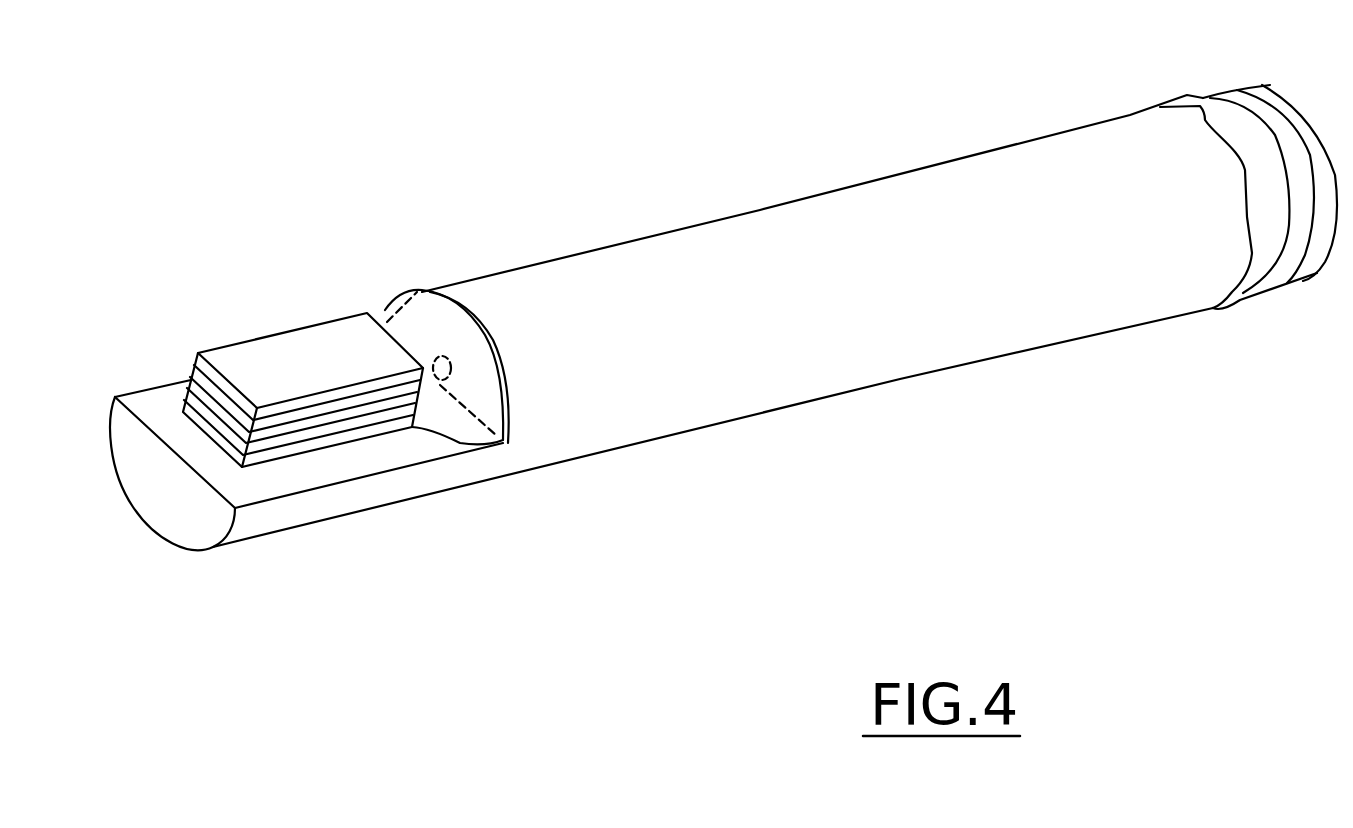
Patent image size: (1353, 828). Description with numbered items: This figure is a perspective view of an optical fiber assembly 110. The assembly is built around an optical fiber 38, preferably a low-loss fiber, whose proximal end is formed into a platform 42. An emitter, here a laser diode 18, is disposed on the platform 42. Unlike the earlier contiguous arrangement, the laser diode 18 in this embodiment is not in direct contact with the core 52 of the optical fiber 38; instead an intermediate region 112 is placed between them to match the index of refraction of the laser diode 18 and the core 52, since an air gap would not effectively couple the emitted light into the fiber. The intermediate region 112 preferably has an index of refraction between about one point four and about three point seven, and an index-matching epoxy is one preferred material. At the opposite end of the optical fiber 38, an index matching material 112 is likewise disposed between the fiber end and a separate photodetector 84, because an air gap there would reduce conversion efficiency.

The optical fiber assembly 110 is at (643, 162).
The optical fiber 38 is at (937, 340).
The platform 42 is at (153, 412).
The laser diode 18 is at (342, 333).
The intermediate region 112 is at (392, 293).
The core 52 is at (450, 363).
The photodetector 84 is at (1317, 265).